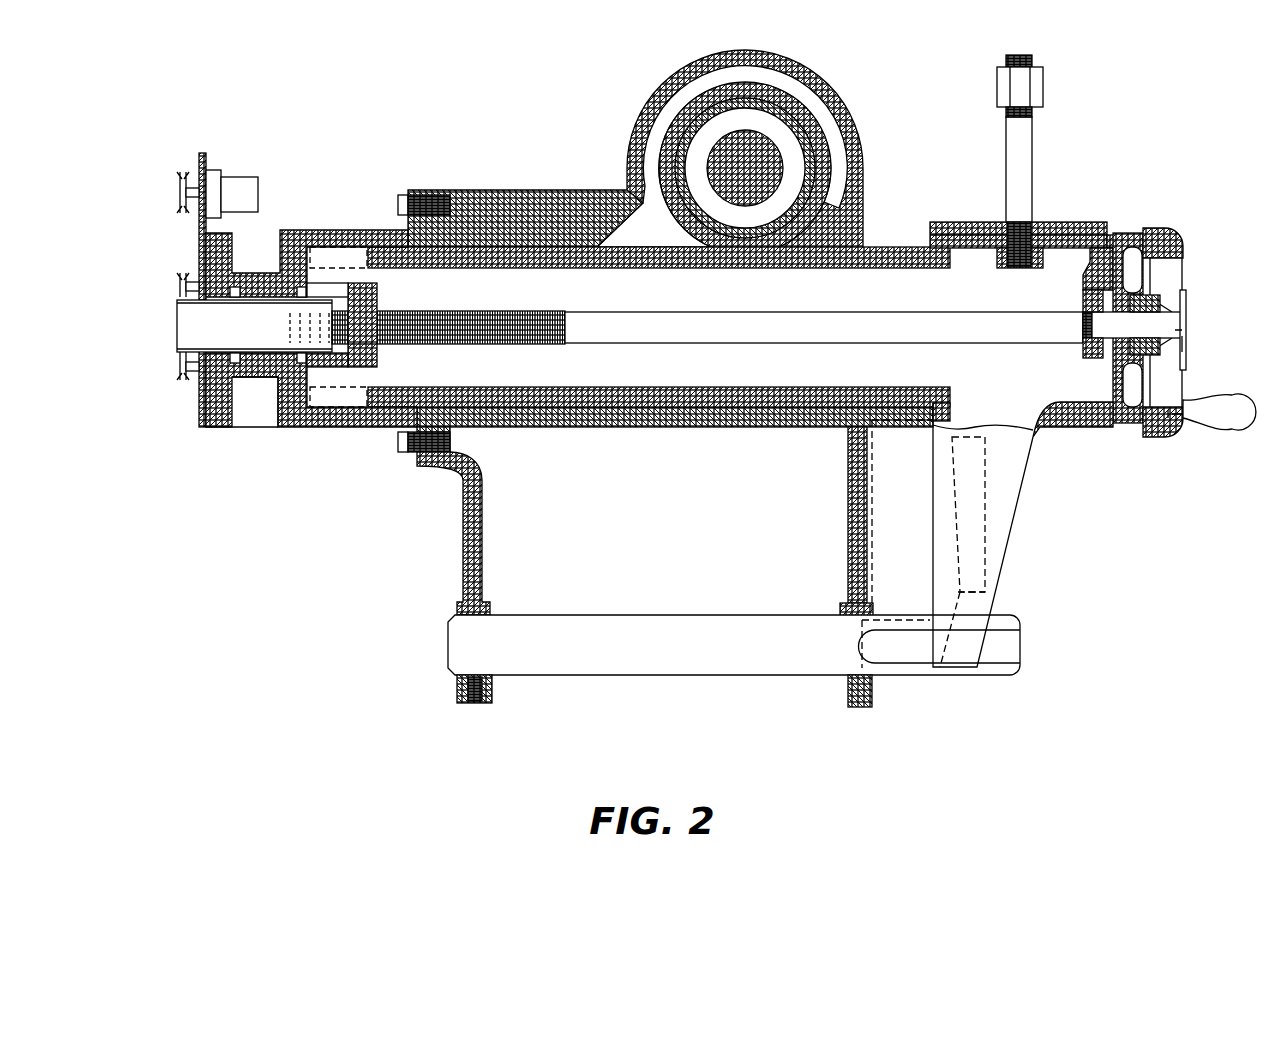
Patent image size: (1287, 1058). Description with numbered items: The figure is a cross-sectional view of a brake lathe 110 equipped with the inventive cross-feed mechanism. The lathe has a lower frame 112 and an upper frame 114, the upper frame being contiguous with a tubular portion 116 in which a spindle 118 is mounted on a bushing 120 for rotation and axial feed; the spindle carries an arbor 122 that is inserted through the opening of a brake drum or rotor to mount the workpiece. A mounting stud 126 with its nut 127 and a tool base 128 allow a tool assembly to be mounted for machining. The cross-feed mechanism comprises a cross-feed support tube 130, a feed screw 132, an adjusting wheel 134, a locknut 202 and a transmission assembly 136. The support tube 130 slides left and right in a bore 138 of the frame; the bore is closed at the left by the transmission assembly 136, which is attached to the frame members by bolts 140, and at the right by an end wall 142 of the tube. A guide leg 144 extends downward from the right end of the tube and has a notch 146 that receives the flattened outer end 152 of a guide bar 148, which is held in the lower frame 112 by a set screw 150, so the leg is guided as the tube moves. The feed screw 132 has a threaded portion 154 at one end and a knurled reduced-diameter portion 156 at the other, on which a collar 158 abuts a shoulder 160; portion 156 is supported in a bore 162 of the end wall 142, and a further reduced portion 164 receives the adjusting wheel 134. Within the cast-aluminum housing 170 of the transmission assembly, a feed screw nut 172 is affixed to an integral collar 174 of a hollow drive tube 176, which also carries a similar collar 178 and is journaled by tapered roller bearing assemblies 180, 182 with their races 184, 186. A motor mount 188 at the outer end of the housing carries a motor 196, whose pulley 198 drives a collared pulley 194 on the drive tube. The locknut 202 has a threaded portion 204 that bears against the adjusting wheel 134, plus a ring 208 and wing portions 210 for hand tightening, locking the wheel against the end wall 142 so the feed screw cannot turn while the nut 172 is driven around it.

The lathe 110 is at (950, 110).
The lower frame 112 is at (462, 548).
The upper frame 114 is at (833, 76).
The tubular portion 116 is at (690, 102).
The spindle 118 is at (820, 180).
The bushing 120 is at (800, 120).
The arbor 122 is at (813, 155).
The mounting stud 126 is at (1028, 152).
The nut 127 is at (1036, 86).
The tool base 128 is at (1084, 222).
The cross-feed support tube 130 is at (515, 387).
The feed screw 132 is at (515, 311).
The adjusting wheel 134 is at (1180, 230).
The transmission assembly 136 is at (214, 430).
The bore 138 is at (535, 258).
The bolts 140 is at (404, 194).
The end wall 142 is at (1088, 412).
The guide leg 144 is at (1024, 520).
The notch 146 is at (996, 606).
The guide bar 148 is at (644, 668).
The set screw 150 is at (466, 704).
The outer end 152 is at (1010, 642).
The threaded portion 154 is at (385, 308).
The reduced-diameter portion 156 is at (1113, 372).
The collar 158 is at (1082, 296).
The shoulder 160 is at (1083, 340).
The bore 162 is at (1100, 324).
The reduced diameter portion 164 is at (1103, 282).
The housing 170 is at (316, 430).
The feed screw nut 172 is at (374, 346).
The integral collar 174 is at (350, 290).
The hollow drive tube 176 is at (355, 366).
The integral collar 178 is at (345, 288).
The tapered roller bearing assembly 180 is at (296, 287).
The tapered roller bearing assembly 182 is at (246, 380).
The bearing race 184 is at (320, 290).
The bearing race 186 is at (217, 349).
The motor mount 188 is at (198, 230).
The collared pulley 194 is at (178, 352).
The motor 196 is at (244, 172).
The pulley 198 is at (178, 186).
The locknut 202 is at (1194, 338).
The threaded portion 204 is at (1165, 292).
The ring 208 is at (1187, 352).
The wing portions 210 is at (1188, 318).